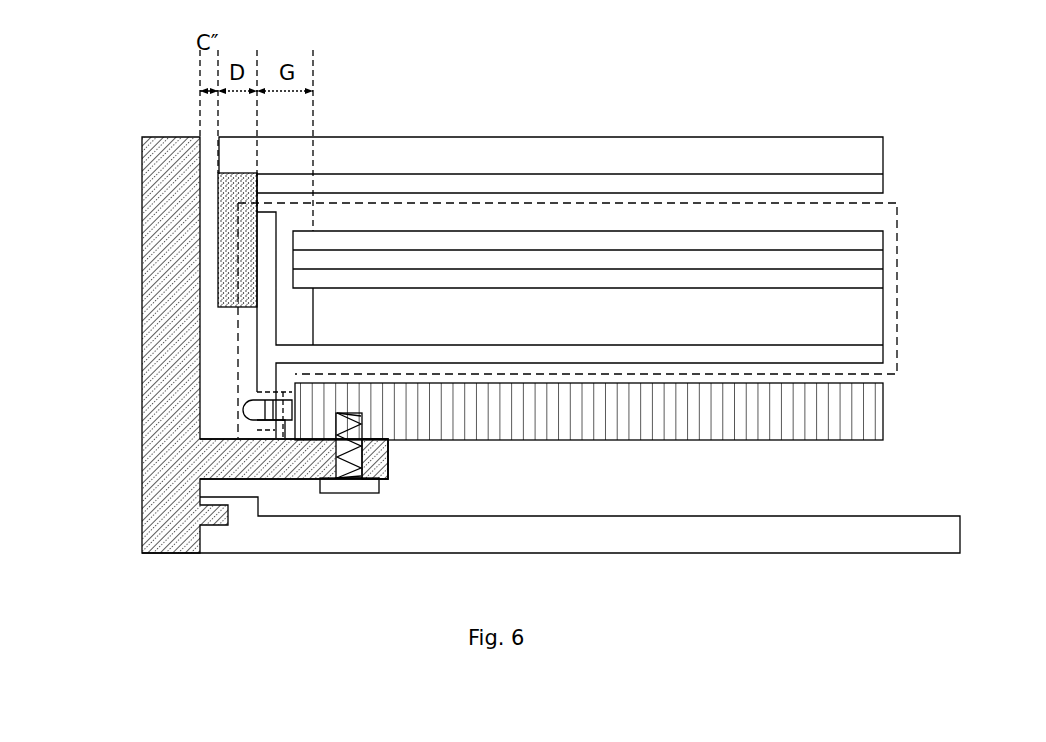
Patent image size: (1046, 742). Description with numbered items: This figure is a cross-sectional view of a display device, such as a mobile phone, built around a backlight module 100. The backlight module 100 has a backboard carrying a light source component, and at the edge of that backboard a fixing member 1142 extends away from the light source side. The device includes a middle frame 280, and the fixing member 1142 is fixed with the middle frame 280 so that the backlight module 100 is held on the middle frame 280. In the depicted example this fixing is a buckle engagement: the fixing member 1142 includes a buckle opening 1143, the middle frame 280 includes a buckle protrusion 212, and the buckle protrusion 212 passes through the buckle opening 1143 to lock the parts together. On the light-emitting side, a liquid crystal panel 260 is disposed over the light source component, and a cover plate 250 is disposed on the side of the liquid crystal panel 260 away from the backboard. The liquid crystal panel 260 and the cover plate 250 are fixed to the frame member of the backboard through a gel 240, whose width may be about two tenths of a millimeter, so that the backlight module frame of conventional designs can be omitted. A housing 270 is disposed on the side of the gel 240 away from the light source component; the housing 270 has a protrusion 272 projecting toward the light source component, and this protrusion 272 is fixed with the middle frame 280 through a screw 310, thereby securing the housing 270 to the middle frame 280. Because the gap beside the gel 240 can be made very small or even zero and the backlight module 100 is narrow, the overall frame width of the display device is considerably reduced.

The backlight module 100 is at (544, 202).
The buckle protrusion 212 is at (303, 478).
The gel 240 is at (238, 263).
The cover plate 250 is at (443, 159).
The liquid crystal panel 260 is at (692, 187).
The housing 270 is at (523, 371).
The protrusion 272 is at (255, 463).
The middle frame 280 is at (618, 408).
The screw 310 is at (358, 487).
The fixing member 1142 is at (392, 457).
The buckle opening 1143 is at (250, 400).